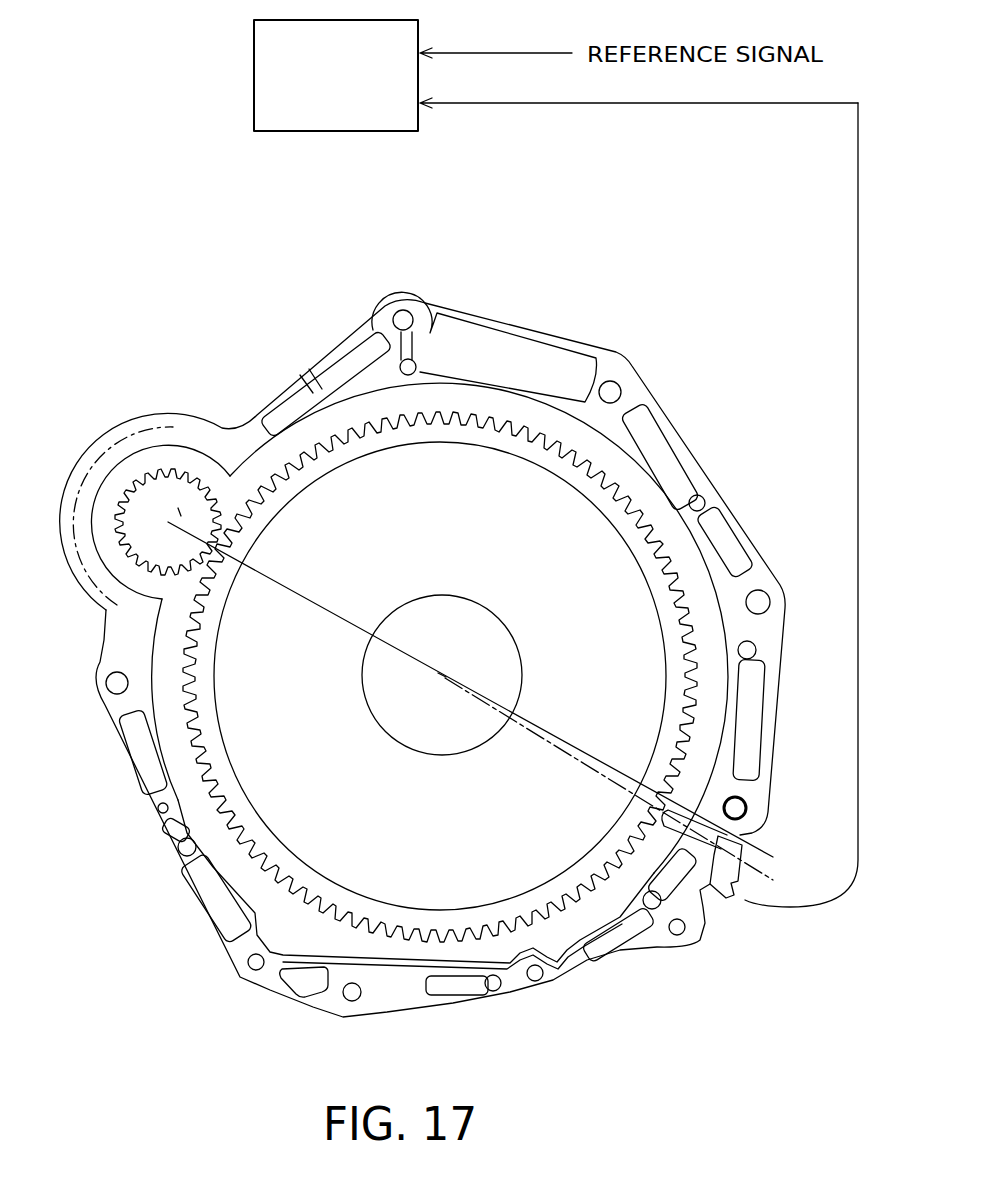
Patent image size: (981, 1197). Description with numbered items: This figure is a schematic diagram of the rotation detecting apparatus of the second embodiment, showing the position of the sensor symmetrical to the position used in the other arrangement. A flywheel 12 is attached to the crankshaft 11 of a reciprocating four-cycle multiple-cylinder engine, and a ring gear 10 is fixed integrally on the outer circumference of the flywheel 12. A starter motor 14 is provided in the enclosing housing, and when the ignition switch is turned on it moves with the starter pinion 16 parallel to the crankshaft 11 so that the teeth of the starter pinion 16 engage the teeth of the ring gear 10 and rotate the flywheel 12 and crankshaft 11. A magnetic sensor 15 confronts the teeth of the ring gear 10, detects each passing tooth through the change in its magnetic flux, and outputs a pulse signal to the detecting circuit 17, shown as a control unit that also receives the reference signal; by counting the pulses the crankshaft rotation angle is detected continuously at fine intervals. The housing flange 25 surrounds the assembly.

The ring gear 10 is at (293, 890).
The crankshaft 11 is at (464, 735).
The flywheel 12 is at (433, 890).
The starter motor 14 is at (78, 488).
The magnetic sensor 15 is at (728, 892).
The starter pinion 16 is at (155, 472).
The detecting circuit 17 is at (254, 88).
The housing 25 is at (690, 455).